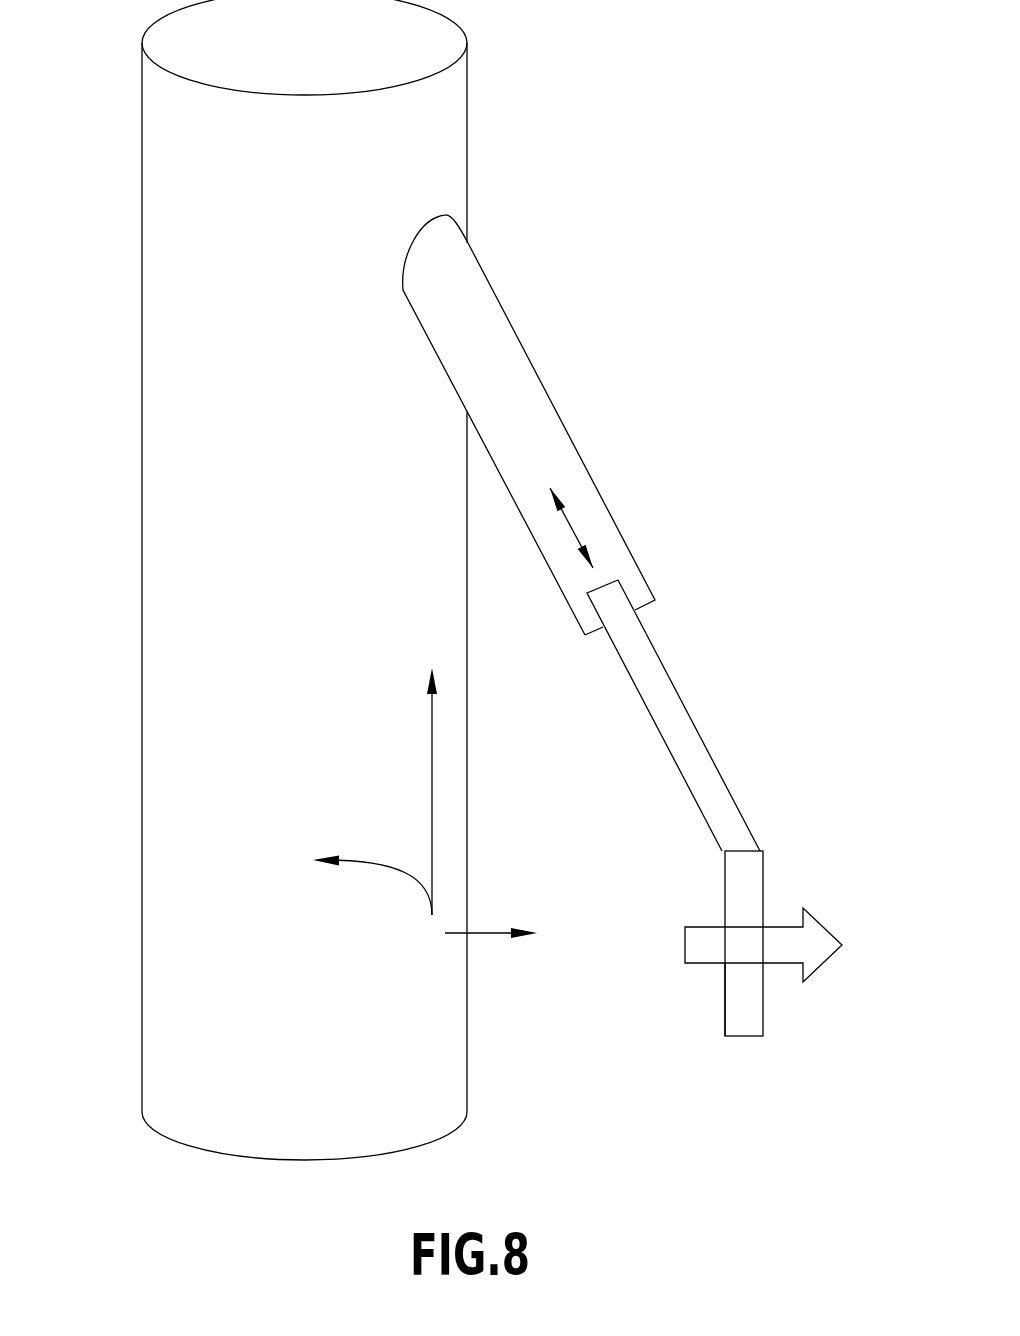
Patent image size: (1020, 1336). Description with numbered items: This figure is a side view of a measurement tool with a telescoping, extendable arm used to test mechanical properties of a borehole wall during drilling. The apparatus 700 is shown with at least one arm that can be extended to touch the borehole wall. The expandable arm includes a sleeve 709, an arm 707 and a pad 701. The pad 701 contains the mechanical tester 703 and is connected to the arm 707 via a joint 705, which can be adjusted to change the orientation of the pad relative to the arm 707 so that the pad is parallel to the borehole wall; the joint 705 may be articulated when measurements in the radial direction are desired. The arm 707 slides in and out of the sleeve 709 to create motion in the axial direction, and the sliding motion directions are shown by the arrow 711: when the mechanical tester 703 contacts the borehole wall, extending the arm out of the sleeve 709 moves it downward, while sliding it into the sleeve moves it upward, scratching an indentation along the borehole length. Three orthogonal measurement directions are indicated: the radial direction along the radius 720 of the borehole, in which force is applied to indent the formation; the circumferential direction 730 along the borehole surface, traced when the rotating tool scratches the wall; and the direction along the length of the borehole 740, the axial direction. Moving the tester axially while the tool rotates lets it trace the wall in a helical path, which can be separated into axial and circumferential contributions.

The apparatus 700 is at (155, 218).
The pad 701 is at (723, 1002).
The mechanical tester 703 is at (842, 947).
The joint 705 is at (743, 850).
The arm 707 is at (718, 685).
The sleeve 709 is at (622, 495).
The sliding motion directions arrow 711 is at (573, 523).
The radius of the borehole 720 is at (543, 933).
The circumferential direction 730 is at (382, 863).
The direction along the length of the borehole 740 is at (438, 768).